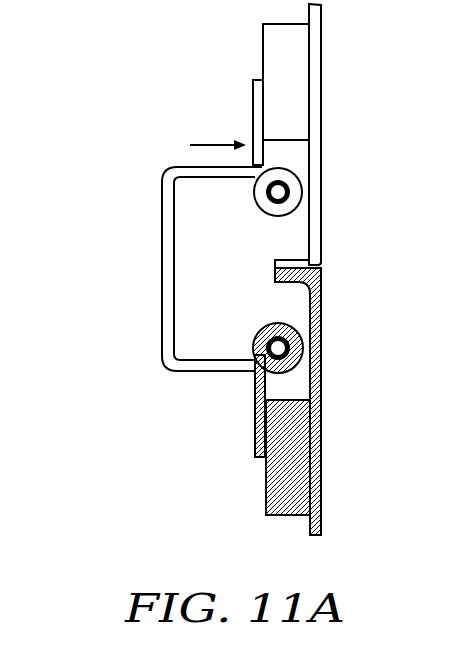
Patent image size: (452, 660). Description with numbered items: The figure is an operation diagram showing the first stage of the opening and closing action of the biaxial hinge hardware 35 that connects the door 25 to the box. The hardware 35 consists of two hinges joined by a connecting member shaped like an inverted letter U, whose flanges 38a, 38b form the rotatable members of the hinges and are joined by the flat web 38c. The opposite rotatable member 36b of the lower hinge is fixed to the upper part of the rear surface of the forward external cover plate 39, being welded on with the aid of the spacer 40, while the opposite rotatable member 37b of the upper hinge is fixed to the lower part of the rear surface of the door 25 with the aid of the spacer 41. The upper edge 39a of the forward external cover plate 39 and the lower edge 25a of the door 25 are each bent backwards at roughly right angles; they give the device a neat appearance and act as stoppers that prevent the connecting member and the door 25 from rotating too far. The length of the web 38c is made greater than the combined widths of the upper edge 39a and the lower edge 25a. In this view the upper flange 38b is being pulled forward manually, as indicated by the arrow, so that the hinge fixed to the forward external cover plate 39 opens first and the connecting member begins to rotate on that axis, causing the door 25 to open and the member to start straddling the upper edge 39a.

The door 25 is at (322, 62).
The lower edge of the door 25a is at (275, 257).
The hardware 35 is at (175, 276).
The opposite rotatable member of the hinge 36b is at (260, 442).
The opposite rotatable member of the other hinge 37b is at (257, 97).
The flange 38a is at (208, 367).
The upper flange 38b is at (190, 167).
The web 38c is at (165, 305).
The forward external cover plate 39 is at (323, 380).
The upper edge of the forward external cover plate 39a is at (275, 283).
The spacer 40 is at (280, 517).
The spacer 41 is at (272, 43).